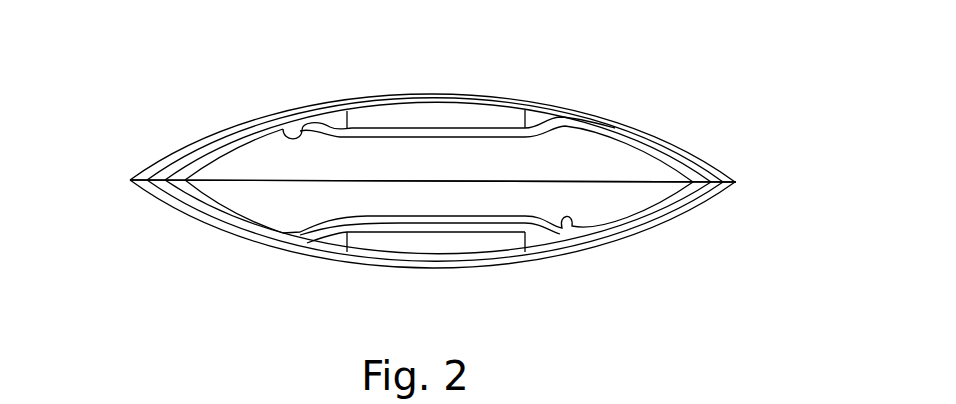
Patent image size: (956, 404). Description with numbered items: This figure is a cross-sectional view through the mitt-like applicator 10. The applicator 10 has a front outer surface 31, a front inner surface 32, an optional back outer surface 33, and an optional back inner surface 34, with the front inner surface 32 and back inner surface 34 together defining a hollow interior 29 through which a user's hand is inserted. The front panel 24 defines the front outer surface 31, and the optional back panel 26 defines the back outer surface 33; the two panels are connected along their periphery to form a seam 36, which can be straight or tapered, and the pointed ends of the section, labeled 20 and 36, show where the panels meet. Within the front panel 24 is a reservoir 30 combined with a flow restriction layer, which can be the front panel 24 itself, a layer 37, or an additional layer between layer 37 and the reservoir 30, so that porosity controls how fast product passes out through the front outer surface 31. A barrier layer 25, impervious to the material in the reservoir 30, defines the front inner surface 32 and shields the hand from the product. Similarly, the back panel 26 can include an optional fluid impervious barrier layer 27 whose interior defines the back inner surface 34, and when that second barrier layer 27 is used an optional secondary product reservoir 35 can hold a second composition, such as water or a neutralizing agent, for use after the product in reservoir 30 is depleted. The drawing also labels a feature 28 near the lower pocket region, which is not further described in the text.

The applicator 10 is at (208, 258).
The front tip 20 is at (162, 160).
The front panel 24 is at (632, 130).
The barrier layer 25 is at (243, 130).
The back panel 26 is at (613, 237).
The fluid impervious barrier layer 27 is at (257, 232).
The lower pocket wall 28 is at (327, 232).
The hollow interior 29 is at (253, 200).
The reservoir 30 is at (467, 112).
The front outer surface 31 is at (392, 94).
The front inner surface 32 is at (285, 130).
The back outer surface 33 is at (660, 228).
The back inner surface 34 is at (568, 228).
The secondary product reservoir 35 is at (447, 247).
The seam 36 is at (740, 182).
The layer 37 is at (458, 101).